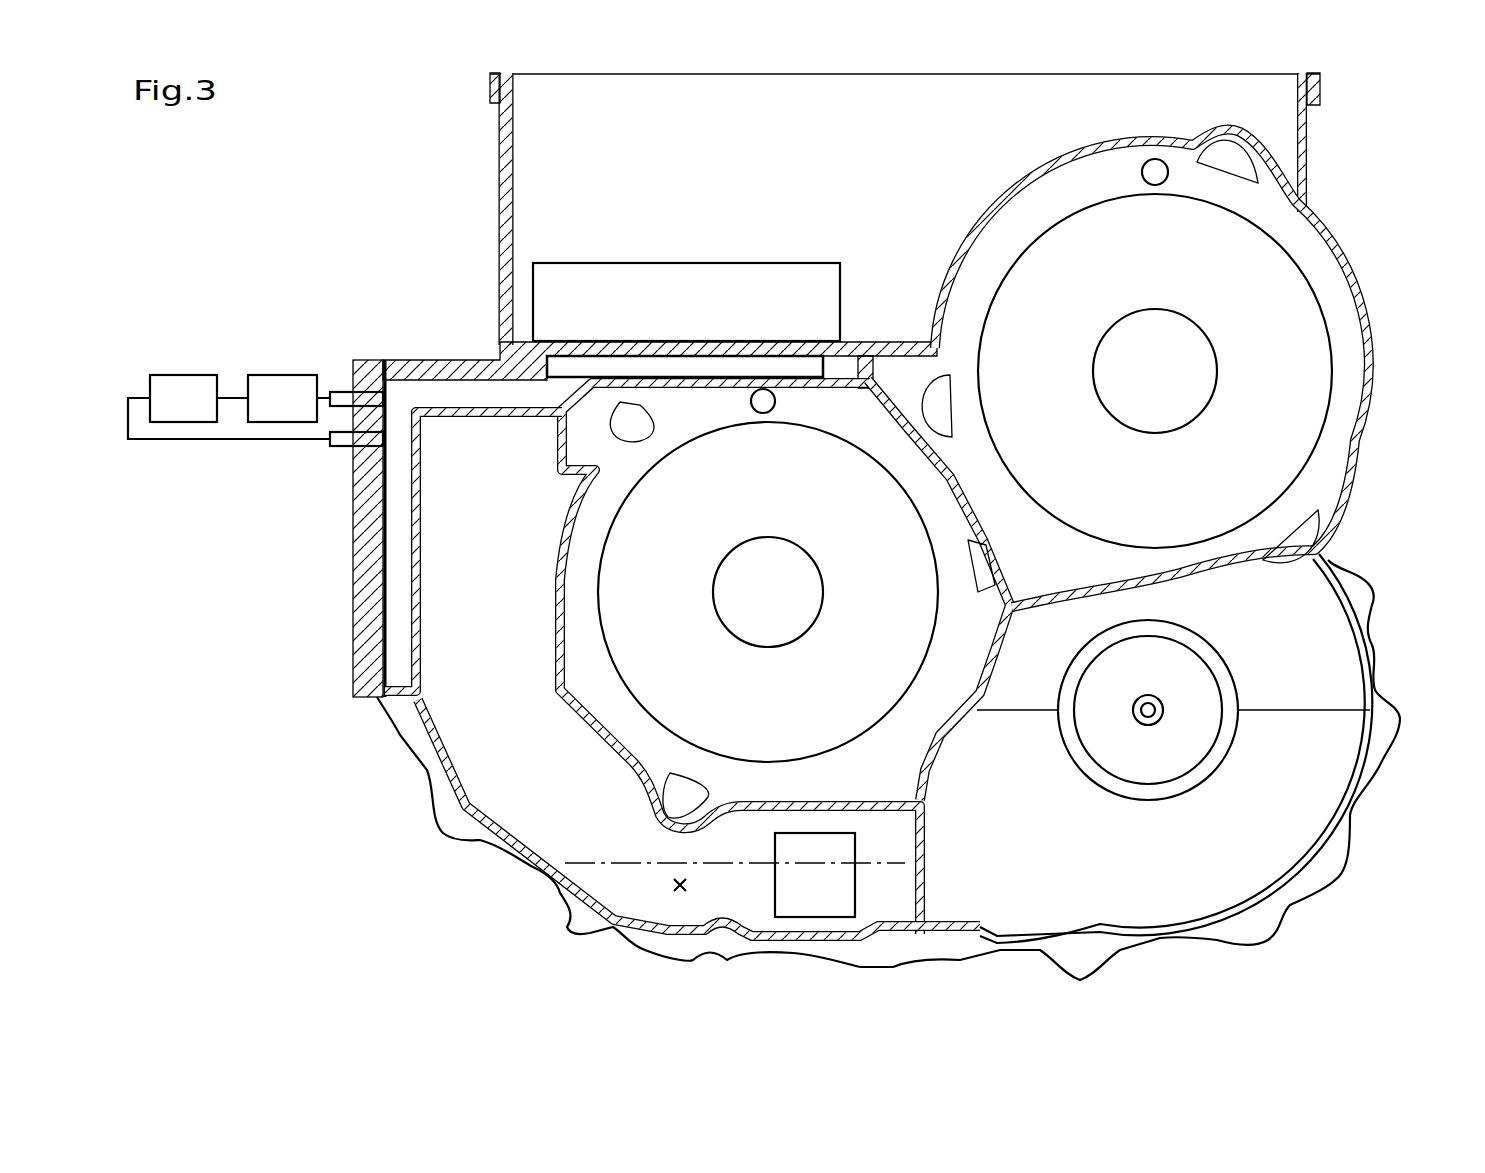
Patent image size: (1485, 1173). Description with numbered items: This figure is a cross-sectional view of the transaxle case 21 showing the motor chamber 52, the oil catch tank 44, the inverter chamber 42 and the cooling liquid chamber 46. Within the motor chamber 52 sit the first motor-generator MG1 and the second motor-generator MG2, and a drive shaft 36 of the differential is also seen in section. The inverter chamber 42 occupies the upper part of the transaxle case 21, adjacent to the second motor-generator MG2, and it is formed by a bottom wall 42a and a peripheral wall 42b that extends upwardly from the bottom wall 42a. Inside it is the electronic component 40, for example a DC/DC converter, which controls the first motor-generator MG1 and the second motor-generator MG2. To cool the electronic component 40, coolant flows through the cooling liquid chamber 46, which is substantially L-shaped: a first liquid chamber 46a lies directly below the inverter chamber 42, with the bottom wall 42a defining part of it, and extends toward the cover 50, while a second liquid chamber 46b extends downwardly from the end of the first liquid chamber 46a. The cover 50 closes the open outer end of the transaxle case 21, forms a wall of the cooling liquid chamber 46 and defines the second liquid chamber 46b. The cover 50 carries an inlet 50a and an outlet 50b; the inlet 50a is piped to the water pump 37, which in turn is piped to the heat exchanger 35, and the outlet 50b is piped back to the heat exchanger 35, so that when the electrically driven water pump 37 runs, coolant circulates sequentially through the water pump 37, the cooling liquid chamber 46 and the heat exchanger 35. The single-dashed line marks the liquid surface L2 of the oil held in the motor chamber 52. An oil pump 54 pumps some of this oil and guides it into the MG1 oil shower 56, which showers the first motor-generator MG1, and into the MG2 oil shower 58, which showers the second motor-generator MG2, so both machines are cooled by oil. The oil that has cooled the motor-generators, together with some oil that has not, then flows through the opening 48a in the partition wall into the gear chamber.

The transaxle case 21 is at (418, 98).
The inverter chamber 42 is at (500, 218).
The bottom wall 42a is at (870, 338).
The peripheral wall 42b is at (500, 158).
The electronic component 40 is at (598, 265).
The oil catch tank 44 is at (450, 668).
The motor chamber 52 is at (1362, 318).
The MG2 oil shower 58 is at (1157, 187).
The MG1 oil shower 56 is at (765, 416).
The first motor-generator MG1 is at (887, 735).
The second motor-generator MG2 is at (1040, 512).
The drive shaft 36 is at (1152, 724).
The cover 50 is at (358, 630).
The cooling liquid chamber 46 is at (291, 517).
The first liquid chamber 46a is at (620, 363).
The second liquid chamber 46b is at (400, 578).
The heat exchanger 35 is at (200, 375).
The water pump 37 is at (276, 375).
The inlet 50a is at (343, 392).
The outlet 50b is at (337, 448).
The oil pump 54 is at (777, 915).
The liquid surface L2 is at (605, 862).
The opening 48a is at (680, 892).